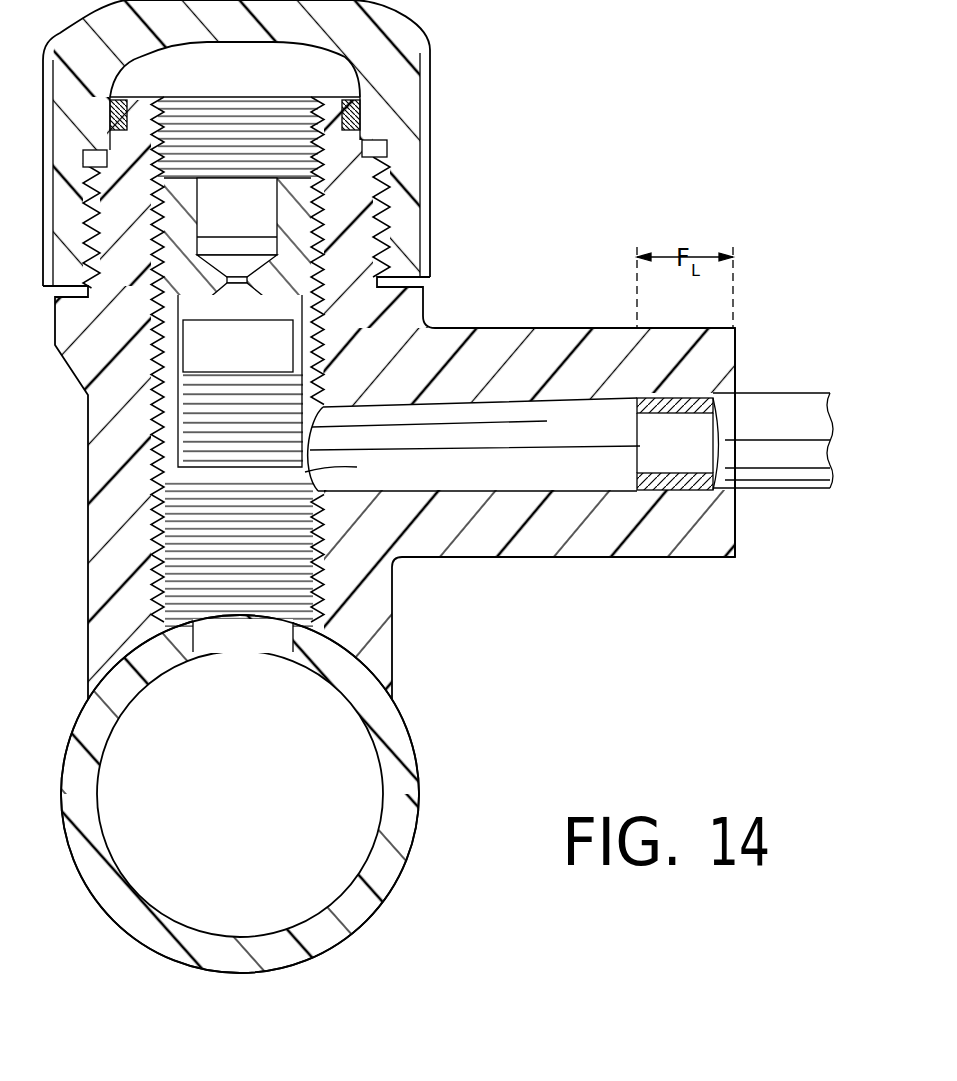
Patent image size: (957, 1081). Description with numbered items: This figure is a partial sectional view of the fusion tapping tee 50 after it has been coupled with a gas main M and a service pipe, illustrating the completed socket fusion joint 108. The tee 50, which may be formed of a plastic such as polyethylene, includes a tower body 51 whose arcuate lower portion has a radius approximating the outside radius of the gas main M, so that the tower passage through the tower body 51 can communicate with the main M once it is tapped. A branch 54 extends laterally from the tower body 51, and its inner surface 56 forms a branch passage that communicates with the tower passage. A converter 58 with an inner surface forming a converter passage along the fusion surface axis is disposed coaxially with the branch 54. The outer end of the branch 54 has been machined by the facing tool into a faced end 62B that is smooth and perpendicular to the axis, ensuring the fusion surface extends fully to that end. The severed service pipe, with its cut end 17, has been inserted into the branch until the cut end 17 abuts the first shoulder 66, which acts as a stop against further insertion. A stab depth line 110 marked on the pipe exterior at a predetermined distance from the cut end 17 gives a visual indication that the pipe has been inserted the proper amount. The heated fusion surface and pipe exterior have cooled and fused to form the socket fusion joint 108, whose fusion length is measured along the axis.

The fusion tapping tee 50 is at (497, 177).
The tower body 51 is at (90, 483).
The branch 54 is at (499, 328).
The inner surface of the branch 56 is at (357, 473).
The converter 58 is at (690, 568).
The faced end 62B is at (710, 392).
The first shoulder 66 is at (640, 447).
The socket fusion joint 108 is at (695, 493).
The stab depth line 110 is at (730, 425).
The cut end 17 is at (638, 402).
The gas main M is at (390, 890).